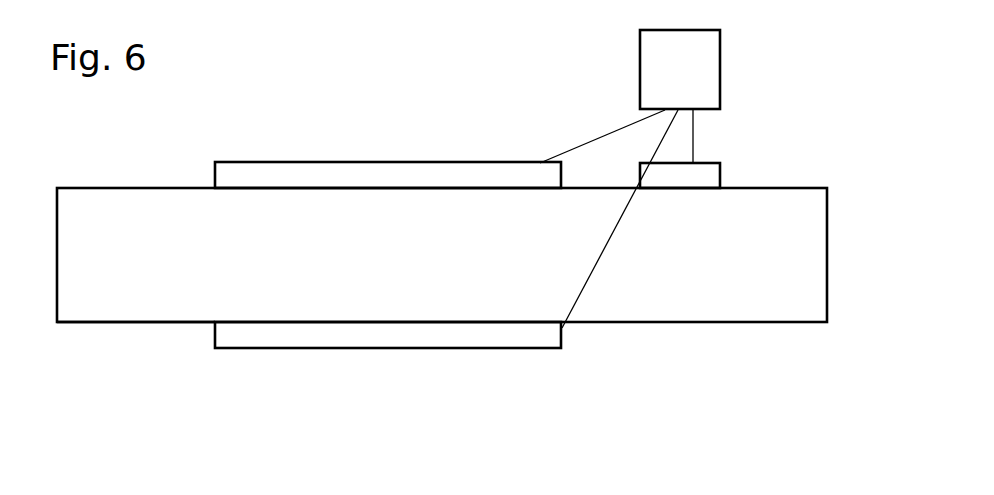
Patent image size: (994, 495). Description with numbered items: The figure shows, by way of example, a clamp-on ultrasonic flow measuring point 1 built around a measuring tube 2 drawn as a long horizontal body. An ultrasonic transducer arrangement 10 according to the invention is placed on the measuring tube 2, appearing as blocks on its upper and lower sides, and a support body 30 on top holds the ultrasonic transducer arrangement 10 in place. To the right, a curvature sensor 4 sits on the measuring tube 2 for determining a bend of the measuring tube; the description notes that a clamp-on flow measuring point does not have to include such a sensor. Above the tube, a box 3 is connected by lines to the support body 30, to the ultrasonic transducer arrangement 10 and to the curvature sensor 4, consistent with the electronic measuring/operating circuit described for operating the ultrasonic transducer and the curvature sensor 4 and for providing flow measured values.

The flow measuring point 1 is at (719, 375).
The measuring tube 2 is at (135, 322).
The controller 3 is at (630, 179).
The curvature sensor 4 is at (720, 163).
The ultrasonic transducer arrangement 10 is at (295, 335).
The support body 30 is at (400, 163).